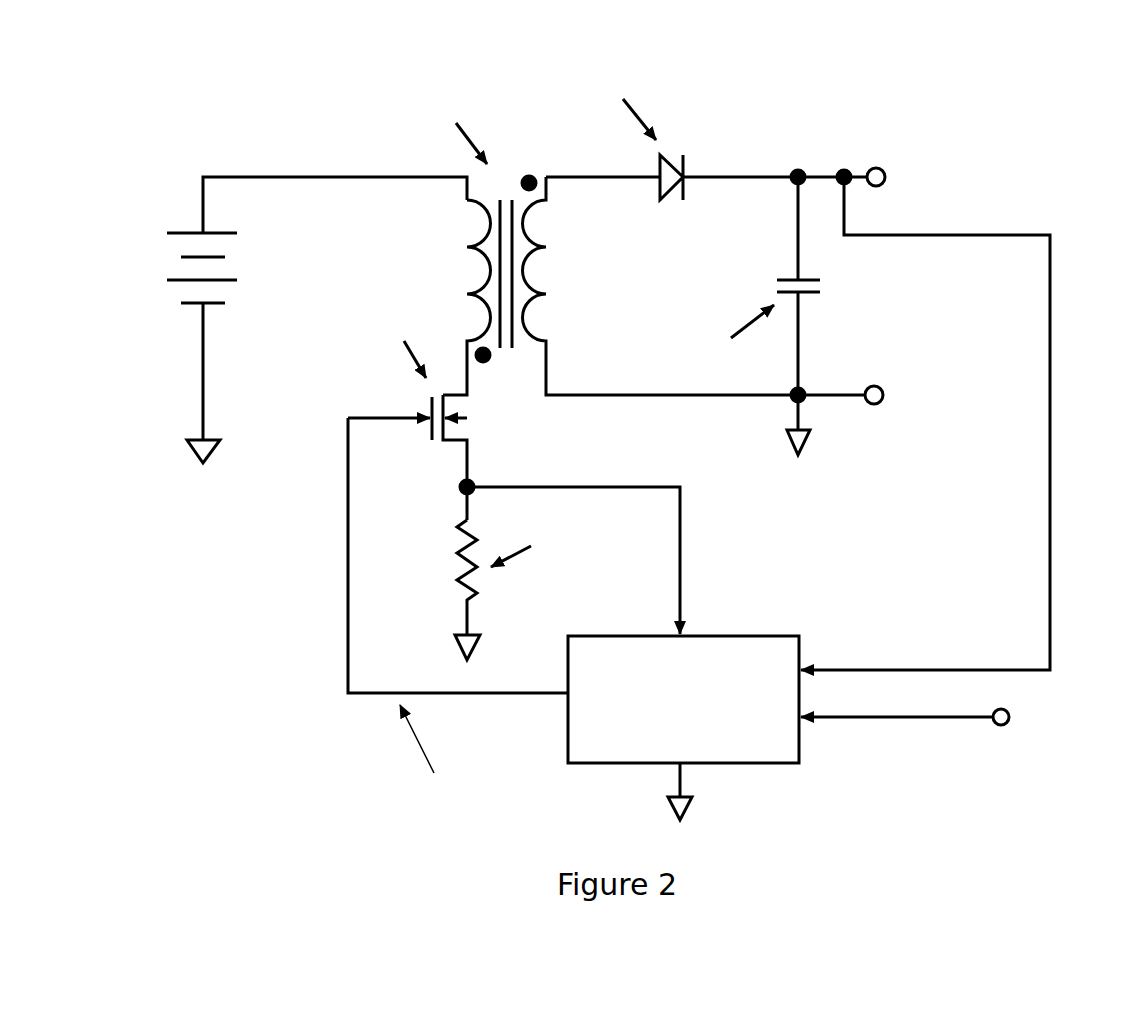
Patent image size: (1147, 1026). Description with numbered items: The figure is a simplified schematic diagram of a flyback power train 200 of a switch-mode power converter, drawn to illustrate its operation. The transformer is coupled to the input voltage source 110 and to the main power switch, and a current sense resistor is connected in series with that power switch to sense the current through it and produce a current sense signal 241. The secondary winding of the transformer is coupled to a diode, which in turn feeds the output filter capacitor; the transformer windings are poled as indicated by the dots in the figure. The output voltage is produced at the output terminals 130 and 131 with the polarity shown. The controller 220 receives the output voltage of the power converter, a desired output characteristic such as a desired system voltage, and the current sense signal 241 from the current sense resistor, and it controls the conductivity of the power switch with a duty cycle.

The flyback power train 200 is at (912, 78).
The input voltage source 110 is at (150, 243).
The output terminal 130 is at (891, 165).
The output terminal 131 is at (890, 412).
The controller 220 is at (683, 699).
The current sense signal 241 is at (692, 565).